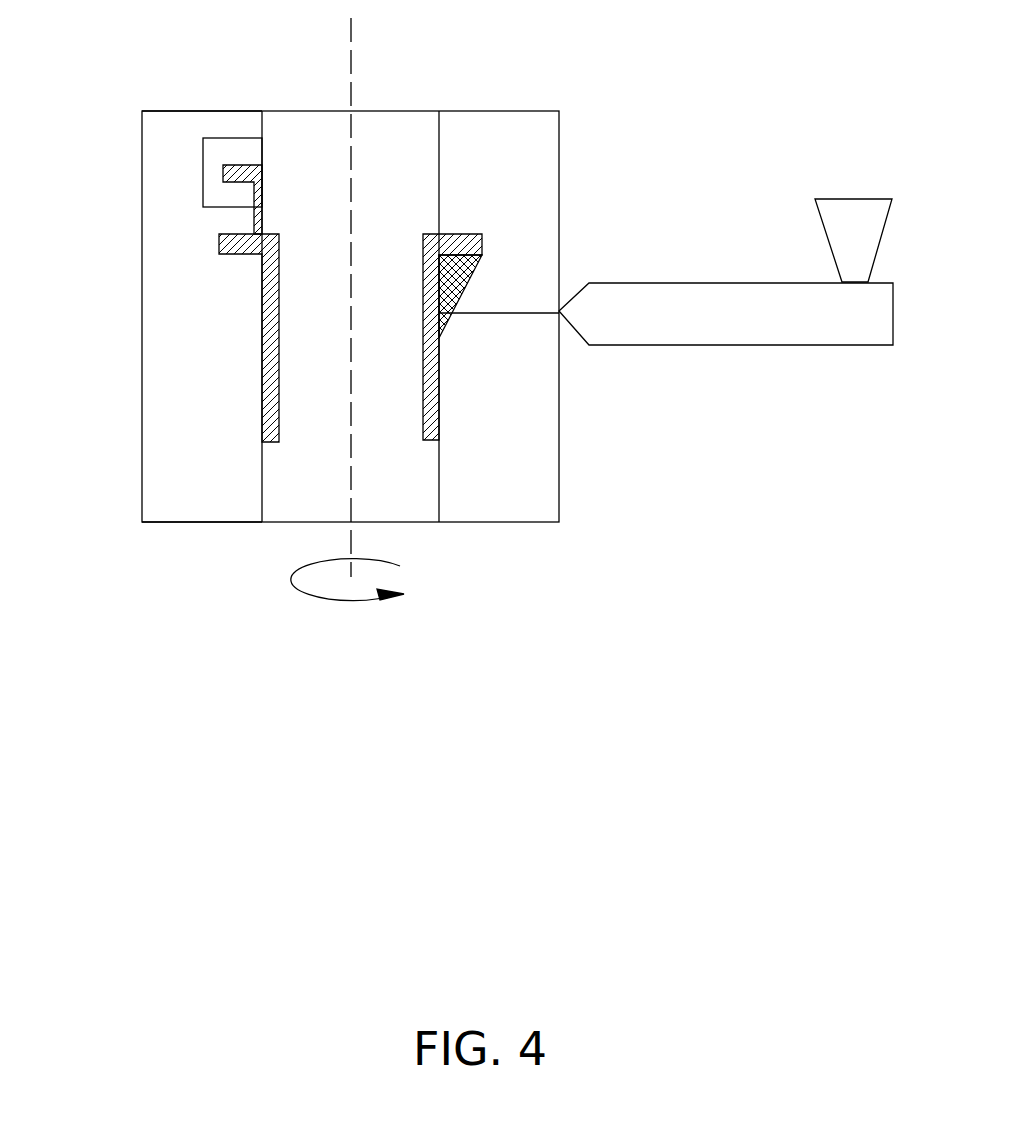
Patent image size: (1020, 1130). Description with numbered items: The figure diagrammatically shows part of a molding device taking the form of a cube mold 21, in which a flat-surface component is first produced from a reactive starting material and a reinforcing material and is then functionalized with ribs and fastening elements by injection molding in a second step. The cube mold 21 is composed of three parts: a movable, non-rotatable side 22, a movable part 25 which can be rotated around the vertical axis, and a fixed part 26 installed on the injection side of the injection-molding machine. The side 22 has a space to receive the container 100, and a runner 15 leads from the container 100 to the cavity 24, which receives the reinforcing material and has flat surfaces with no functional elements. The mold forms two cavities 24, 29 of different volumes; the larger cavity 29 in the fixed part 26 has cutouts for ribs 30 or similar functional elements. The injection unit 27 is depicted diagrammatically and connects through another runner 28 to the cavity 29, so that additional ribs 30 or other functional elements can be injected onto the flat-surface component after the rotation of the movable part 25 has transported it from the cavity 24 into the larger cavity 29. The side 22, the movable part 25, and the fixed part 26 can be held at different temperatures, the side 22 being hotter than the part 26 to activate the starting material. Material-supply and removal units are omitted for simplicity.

The cube mold 21 is at (596, 104).
The movable, non-rotatable side 22 is at (175, 215).
The cavity 24 is at (262, 263).
The movable part 25 is at (274, 507).
The fixed part 26 is at (511, 506).
The injection unit 27 is at (768, 311).
The runner 28 is at (506, 313).
The cavity 29 is at (442, 235).
The ribs 30 is at (458, 277).
The runner 15 is at (263, 197).
The container 100 is at (242, 167).